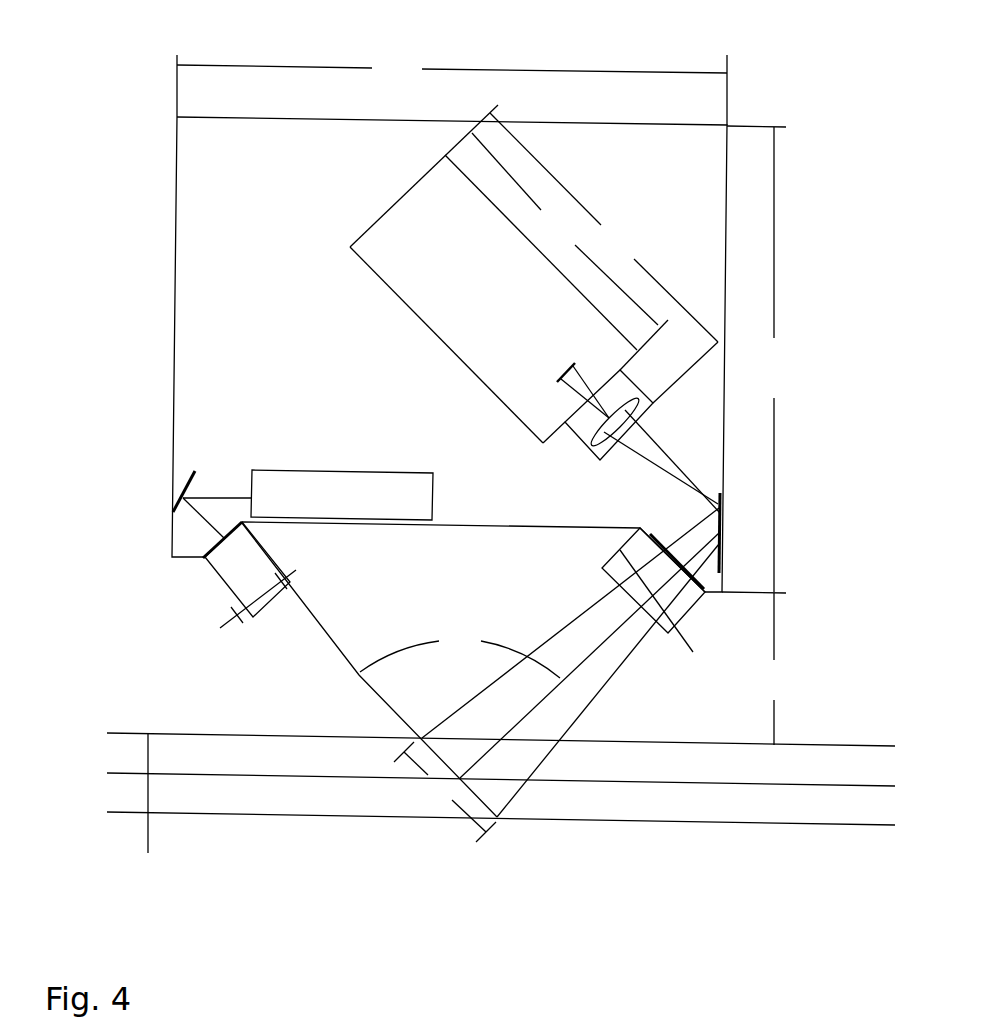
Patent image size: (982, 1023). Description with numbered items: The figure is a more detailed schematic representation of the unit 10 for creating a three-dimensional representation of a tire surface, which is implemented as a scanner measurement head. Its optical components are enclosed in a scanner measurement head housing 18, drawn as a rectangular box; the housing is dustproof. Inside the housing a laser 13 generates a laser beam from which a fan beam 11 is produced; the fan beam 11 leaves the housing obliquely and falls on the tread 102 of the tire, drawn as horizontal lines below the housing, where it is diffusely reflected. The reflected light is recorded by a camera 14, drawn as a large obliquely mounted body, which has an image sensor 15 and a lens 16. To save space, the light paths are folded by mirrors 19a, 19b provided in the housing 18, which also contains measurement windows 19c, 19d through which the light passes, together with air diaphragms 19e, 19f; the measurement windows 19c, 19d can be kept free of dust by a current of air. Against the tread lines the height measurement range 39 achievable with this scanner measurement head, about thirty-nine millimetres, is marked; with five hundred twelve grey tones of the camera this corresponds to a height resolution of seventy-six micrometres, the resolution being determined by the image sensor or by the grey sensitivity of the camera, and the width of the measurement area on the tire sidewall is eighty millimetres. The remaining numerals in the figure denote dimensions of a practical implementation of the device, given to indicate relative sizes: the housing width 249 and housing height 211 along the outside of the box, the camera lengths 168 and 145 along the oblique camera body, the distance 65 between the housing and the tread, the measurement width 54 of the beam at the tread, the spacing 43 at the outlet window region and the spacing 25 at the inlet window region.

The unit for creating a three-dimensional representation of the surface 10 is at (157, 166).
The fan beam 11 is at (323, 638).
The laser 13 is at (362, 470).
The camera 14 is at (488, 231).
The image sensor 15 is at (557, 380).
The lens 16 is at (640, 412).
The scanner measurement head housing 18 is at (172, 295).
The mirror 19a is at (187, 478).
The mirror 19b is at (722, 542).
The measurement window 19c is at (203, 553).
The measurement window 19d is at (722, 585).
The air diaphragm 19e is at (204, 569).
The air diaphragm 19f is at (733, 590).
The dimension 25 mm 25 is at (241, 614).
The height measurement range 39 is at (148, 813).
The dimension 43 mm 43 is at (670, 613).
The dimension 54 mm (measurement width) 54 is at (445, 792).
The dimension 65 mm 65 is at (770, 669).
The tread 102 is at (501, 762).
The dimension 145 mm 145 is at (565, 229).
The dimension 168 mm 168 is at (604, 227).
The dimension 211 mm (housing height) 211 is at (754, 359).
The dimension 249 mm (housing width) 249 is at (452, 90).